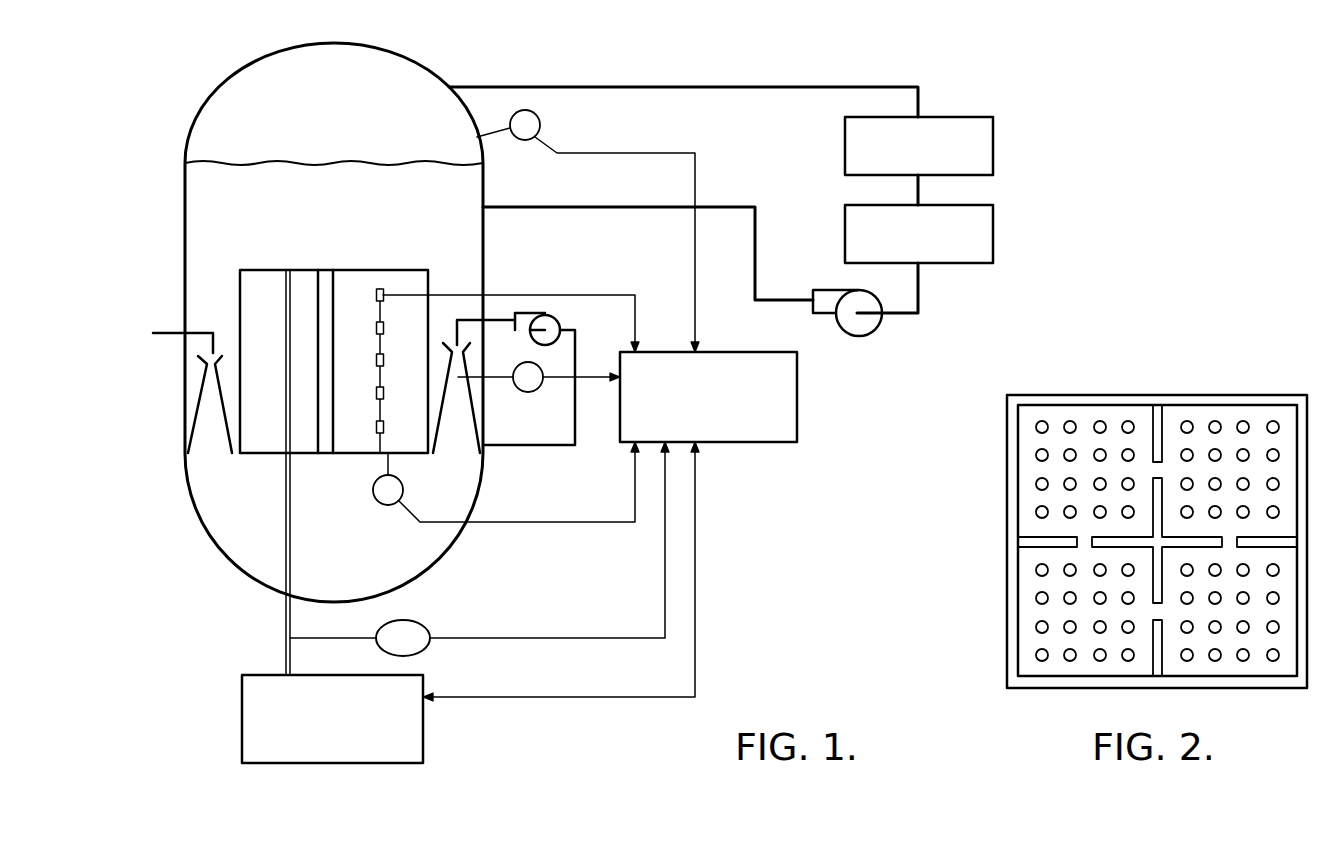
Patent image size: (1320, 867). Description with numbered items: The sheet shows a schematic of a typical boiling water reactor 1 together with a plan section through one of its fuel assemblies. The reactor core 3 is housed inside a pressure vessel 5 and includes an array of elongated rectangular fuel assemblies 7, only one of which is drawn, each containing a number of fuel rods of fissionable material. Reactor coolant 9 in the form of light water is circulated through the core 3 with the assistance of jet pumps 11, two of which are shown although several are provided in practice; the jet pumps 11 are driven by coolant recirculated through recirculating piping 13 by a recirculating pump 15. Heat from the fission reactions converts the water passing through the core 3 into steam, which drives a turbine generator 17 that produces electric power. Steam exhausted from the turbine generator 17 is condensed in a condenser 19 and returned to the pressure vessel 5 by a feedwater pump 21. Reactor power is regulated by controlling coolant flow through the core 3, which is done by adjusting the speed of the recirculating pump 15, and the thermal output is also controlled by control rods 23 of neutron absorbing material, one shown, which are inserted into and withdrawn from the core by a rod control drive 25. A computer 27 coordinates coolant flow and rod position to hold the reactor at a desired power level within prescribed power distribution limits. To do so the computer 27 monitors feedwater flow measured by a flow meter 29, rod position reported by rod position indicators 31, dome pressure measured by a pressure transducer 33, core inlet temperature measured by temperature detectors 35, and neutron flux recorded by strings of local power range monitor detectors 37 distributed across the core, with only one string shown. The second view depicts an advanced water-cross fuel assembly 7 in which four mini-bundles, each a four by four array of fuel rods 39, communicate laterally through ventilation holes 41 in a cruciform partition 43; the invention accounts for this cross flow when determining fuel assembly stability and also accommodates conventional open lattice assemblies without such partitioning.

In FIG. 1, the boiling water reactor 1 is at (175, 252).
In FIG. 1, the reactor core 3 is at (258, 270).
In FIG. 1, the pressure vessel 5 is at (211, 108).
In FIG. 1, the fuel assembly 7 is at (336, 292).
In FIG. 2, the fuel assembly 7 is at (1239, 358).
In FIG. 1, the reactor coolant 9 is at (224, 193).
In FIG. 1, the jet pump 11 is at (203, 383).
In FIG. 1, the recirculating piping 13 is at (550, 446).
In FIG. 1, the recirculating pump 15 is at (560, 322).
In FIG. 1, the turbine generator 17 is at (993, 142).
In FIG. 1, the condenser 19 is at (993, 230).
In FIG. 1, the feedwater pump 21 is at (835, 290).
In FIG. 1, the control rod 23 is at (292, 297).
In FIG. 1, the rod control drive 25 is at (242, 715).
In FIG. 1, the computer 27 is at (735, 442).
In FIG. 1, the flow meter 29 is at (522, 392).
In FIG. 1, the rod position indicator 31 is at (422, 623).
In FIG. 1, the pressure transducer 33 is at (540, 120).
In FIG. 1, the temperature detector 35 is at (389, 506).
In FIG. 1, the local power range monitor string 37 is at (372, 428).
In FIG. 2, the fuel rods 39 is at (1101, 420).
In FIG. 2, the ventilation hole 41 is at (1155, 470).
In FIG. 2, the cruciform partition 43 is at (1082, 558).